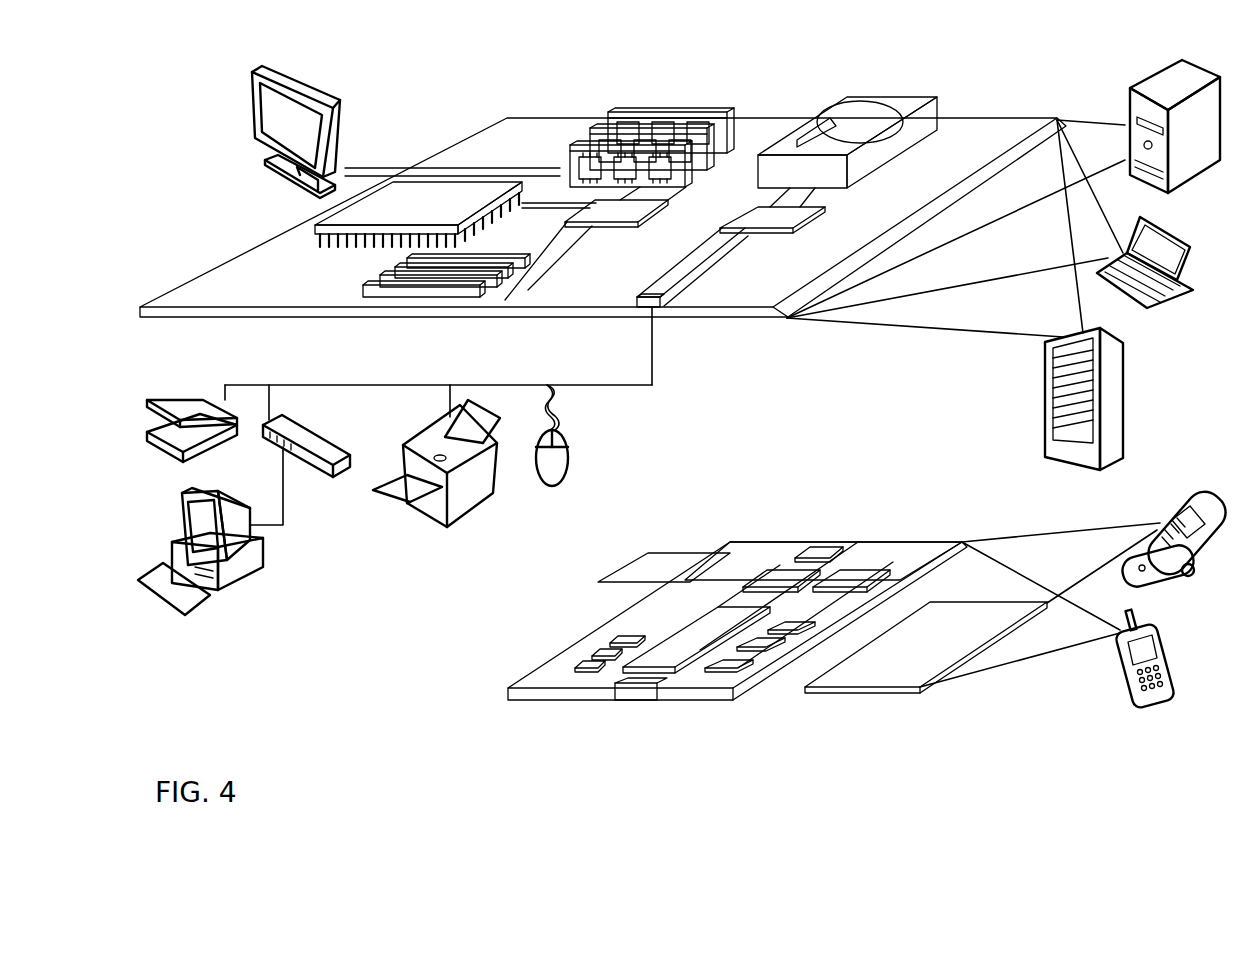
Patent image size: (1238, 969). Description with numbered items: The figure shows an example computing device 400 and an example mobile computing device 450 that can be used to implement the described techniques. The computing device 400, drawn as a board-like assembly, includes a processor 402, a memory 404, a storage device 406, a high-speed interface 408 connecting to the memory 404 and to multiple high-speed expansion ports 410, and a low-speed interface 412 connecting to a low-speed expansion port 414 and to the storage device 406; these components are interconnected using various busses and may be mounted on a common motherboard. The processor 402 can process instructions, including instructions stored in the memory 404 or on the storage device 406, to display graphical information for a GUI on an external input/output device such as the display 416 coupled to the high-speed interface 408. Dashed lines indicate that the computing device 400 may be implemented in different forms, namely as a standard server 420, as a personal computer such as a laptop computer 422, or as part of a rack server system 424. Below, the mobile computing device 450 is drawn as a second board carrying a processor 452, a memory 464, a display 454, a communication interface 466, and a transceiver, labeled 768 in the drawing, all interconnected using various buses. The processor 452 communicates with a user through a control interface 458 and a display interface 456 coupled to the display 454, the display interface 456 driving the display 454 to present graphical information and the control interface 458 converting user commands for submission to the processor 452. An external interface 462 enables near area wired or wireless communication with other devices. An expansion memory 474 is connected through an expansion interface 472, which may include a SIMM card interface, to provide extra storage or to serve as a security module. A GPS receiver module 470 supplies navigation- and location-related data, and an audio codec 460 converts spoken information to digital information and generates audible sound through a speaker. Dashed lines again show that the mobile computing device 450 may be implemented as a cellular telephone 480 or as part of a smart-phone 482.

The computing device 400 is at (432, 93).
The processor 402 is at (320, 230).
The memory 404 is at (626, 115).
The storage device 406 is at (838, 101).
The high-speed interface 408 is at (595, 212).
The high-speed expansion ports 410 is at (380, 288).
The low-speed interface 412 is at (757, 215).
The low-speed expansion port 414 is at (663, 308).
The display 416 is at (252, 70).
The standard server 420 is at (1128, 104).
The laptop computer 422 is at (1182, 244).
The rack server system 424 is at (1045, 420).
The mobile computing device 450 is at (484, 704).
The processor 452 is at (672, 660).
The display 454 is at (892, 672).
The display interface 456 is at (738, 668).
The control interface 458 is at (760, 645).
The audio codec 460 is at (790, 628).
The external interface 462 is at (640, 690).
The memory 464 is at (598, 653).
The communication interface 466 is at (782, 574).
The GPS receiver module 470 is at (818, 547).
The expansion interface 472 is at (720, 548).
The expansion memory 474 is at (650, 553).
The component 768 is at (855, 574).
The cellular telephone 480 is at (1160, 508).
The mobile phone 482 is at (1112, 672).